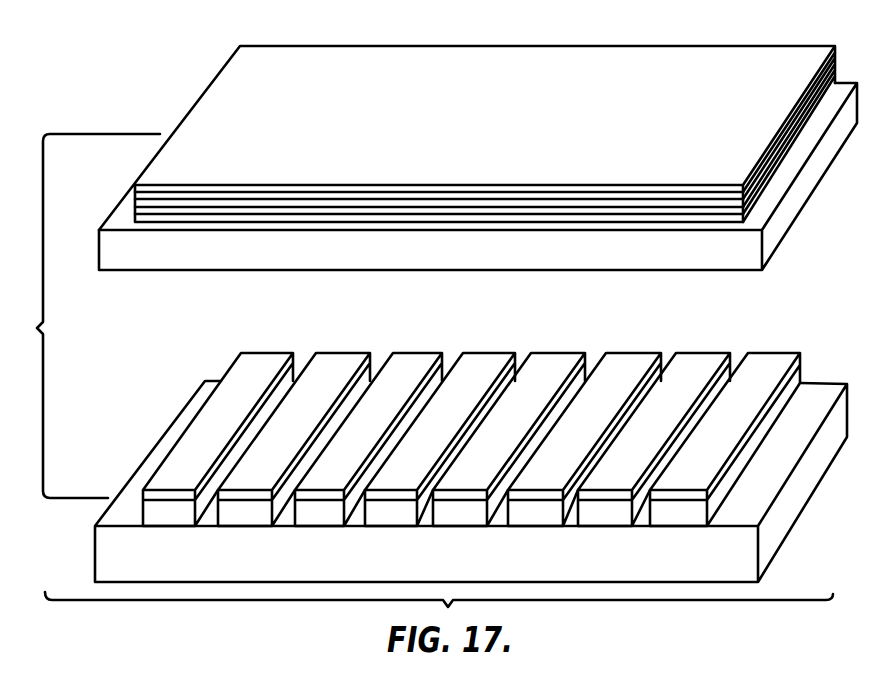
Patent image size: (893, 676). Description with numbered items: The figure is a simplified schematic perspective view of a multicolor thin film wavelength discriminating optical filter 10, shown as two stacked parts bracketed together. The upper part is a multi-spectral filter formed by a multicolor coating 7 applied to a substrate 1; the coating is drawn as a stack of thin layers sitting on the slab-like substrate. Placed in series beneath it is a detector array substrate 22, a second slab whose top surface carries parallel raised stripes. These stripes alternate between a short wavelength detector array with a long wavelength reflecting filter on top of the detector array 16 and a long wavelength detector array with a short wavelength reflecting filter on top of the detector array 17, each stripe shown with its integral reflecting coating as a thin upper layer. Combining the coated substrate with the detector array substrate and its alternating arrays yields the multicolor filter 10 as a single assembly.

The substrate 1 is at (783, 227).
The multicolor coating 7 is at (232, 76).
The multicolor thin film wavelength discriminating optical filter 10 is at (88, 316).
The short wavelength detector array with long wavelength reflecting filter 16 is at (260, 352).
The long wavelength detector array with short wavelength reflecting filter 17 is at (338, 352).
The detector array substrate 22 is at (777, 535).